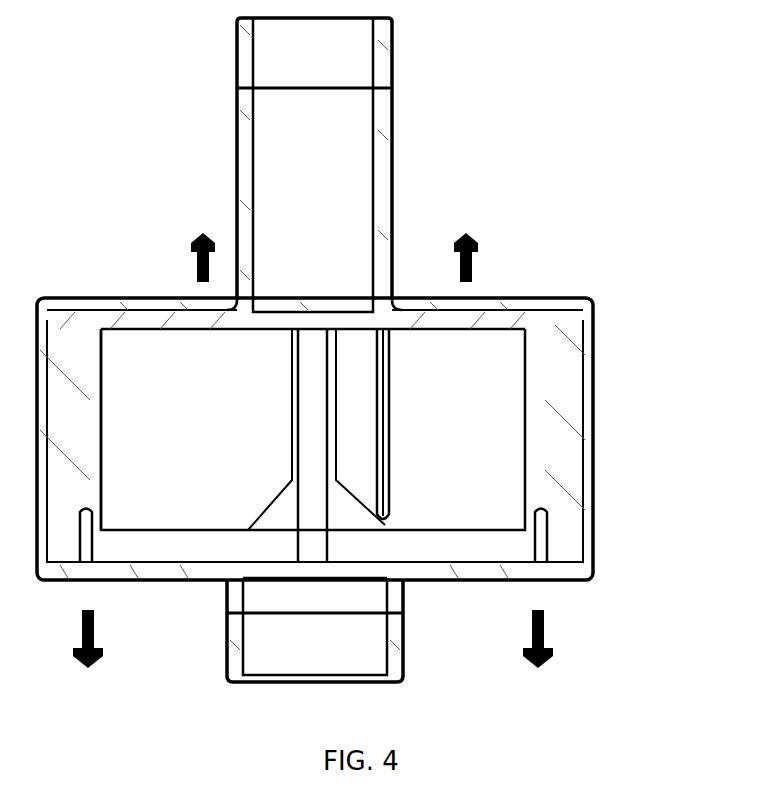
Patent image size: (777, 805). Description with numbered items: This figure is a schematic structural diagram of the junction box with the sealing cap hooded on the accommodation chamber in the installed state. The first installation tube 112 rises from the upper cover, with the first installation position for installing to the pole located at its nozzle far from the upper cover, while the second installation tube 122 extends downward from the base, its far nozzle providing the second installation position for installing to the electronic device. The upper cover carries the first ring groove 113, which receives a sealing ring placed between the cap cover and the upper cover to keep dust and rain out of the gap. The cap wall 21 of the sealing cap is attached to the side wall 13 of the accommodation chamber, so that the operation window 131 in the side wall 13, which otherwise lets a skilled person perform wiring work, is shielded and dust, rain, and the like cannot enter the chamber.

The first installation tube 112 is at (339, 193).
The first ring groove 113 is at (458, 312).
The cap wall 21 is at (593, 340).
The side wall 13 is at (550, 406).
The operation window 131 is at (481, 482).
The second installation tube 122 is at (343, 638).